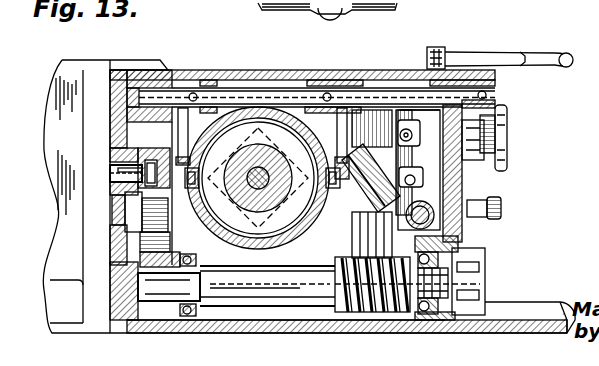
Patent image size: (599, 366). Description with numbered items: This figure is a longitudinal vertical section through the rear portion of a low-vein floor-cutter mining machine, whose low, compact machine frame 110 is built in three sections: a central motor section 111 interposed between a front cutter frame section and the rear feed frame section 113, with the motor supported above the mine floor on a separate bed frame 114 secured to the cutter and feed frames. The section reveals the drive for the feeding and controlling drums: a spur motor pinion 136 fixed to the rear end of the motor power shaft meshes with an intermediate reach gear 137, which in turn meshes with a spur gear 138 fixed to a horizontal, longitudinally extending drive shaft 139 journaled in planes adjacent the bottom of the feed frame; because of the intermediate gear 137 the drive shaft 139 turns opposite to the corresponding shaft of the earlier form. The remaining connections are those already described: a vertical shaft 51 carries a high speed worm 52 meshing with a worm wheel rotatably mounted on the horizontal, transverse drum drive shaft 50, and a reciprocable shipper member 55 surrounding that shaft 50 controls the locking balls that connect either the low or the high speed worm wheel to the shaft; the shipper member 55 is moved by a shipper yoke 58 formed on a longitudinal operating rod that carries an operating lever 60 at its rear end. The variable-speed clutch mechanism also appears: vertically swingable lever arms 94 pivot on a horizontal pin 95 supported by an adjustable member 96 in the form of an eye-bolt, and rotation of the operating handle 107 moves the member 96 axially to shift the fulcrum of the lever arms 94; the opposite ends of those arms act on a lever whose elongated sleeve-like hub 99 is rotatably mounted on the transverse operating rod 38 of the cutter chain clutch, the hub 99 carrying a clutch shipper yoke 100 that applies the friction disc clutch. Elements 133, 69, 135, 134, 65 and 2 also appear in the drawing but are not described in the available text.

The machine frame 110 is at (71, 69).
The bed frame 114 is at (65, 312).
The rear feed frame section 113 is at (160, 70).
The cover 133 is at (223, 50).
The shaft 69 is at (278, 97).
The bolt 135 is at (402, 44).
The adjustable member 96 is at (412, 155).
The handle 134 is at (561, 58).
The operating handle 107 is at (505, 133).
The horizontal pin 95 is at (505, 160).
The lever arms 94 is at (418, 162).
The operating lever 60 is at (478, 184).
The sleeve-like hub 99 is at (462, 222).
The clutch shipper yoke 100 is at (467, 240).
The transverse operating rod 38 is at (428, 203).
The shipper yoke 58 is at (183, 148).
The shipper member 55 is at (303, 152).
The spur motor pinion 136 is at (152, 156).
The central motor section 111 is at (54, 185).
The intermediate reach gear 137 is at (108, 232).
The drum drive shaft 50 is at (247, 198).
The high speed worm 52 is at (350, 226).
The vertical shaft 51 is at (352, 244).
The gear 65 is at (247, 236).
The drive shaft 139 is at (262, 298).
The worm 2 is at (357, 333).
The spur gear 138 is at (153, 320).